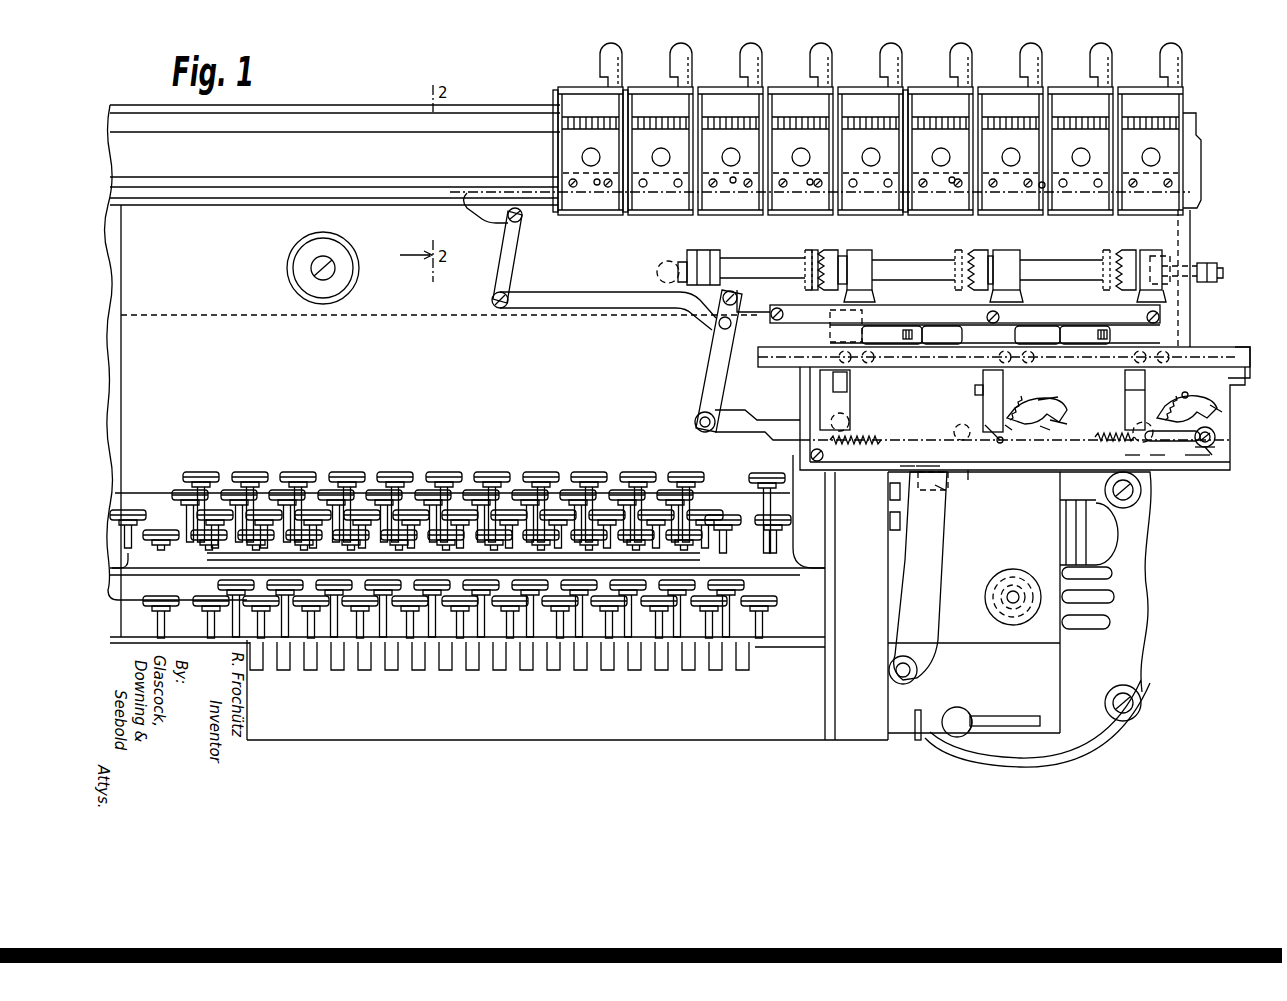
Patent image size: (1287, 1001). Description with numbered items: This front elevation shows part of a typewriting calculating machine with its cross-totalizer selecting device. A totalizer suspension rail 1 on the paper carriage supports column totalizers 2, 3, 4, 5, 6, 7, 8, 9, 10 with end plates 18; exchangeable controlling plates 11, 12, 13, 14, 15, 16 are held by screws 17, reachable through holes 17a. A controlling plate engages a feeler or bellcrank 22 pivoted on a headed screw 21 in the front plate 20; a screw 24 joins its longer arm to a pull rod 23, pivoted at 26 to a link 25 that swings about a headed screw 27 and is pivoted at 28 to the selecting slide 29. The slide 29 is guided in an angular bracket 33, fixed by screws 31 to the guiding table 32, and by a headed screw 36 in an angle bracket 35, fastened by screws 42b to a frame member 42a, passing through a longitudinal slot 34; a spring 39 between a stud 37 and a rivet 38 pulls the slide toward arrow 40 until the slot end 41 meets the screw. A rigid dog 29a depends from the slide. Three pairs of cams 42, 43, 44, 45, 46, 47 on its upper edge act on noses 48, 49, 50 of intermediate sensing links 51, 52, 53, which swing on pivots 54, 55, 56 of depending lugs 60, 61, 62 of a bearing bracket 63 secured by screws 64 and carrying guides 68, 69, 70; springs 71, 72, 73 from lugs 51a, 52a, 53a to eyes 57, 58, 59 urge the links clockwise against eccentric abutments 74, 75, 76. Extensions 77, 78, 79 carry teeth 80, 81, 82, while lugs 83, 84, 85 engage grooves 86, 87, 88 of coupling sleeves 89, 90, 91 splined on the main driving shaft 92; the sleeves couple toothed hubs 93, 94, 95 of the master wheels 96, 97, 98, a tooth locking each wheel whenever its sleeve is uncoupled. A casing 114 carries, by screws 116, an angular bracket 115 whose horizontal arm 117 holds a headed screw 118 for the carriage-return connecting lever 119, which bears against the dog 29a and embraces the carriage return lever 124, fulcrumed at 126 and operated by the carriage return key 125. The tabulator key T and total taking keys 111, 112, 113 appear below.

The frame rail 1 is at (345, 132).
The register module 2 is at (598, 100).
The register module 3 is at (680, 105).
The register module 4 is at (708, 103).
The register module 5 is at (792, 102).
The register module 6 is at (855, 102).
The register module 7 is at (968, 112).
The register module 8 is at (1030, 103).
The register module 9 is at (1093, 103).
The register module 10 is at (1145, 105).
The module pivot 11 is at (600, 180).
The module pivot 12 is at (735, 178).
The module pivot 13 is at (812, 180).
The module pivot 14 is at (954, 178).
The module pivot 15 is at (1044, 183).
The end bracket 16 is at (1188, 160).
The fastening screw 17 is at (606, 187).
The fastening screw 17a is at (678, 187).
The spacer 18 is at (558, 95).
The carriage plate screw 20 is at (372, 262).
The lever pivot 21 is at (508, 222).
The lever 22 is at (522, 252).
The link 23 is at (532, 292).
The pivot 24 is at (496, 310).
The lever 25 is at (718, 380).
The pivot 26 is at (719, 326).
The pivot 27 is at (722, 300).
The pivot 28 is at (694, 424).
The link 29 is at (758, 440).
The axis line 29a is at (965, 447).
The post 31 is at (848, 384).
The guide 32 is at (1240, 345).
The housing 33 is at (800, 380).
The rod 34 is at (1170, 441).
The pivot screw 35 is at (1215, 435).
The plate 36 is at (1202, 456).
The plate 37 is at (1130, 456).
The side plate 38 is at (826, 480).
The spring 39 is at (1110, 442).
The shaft 40 is at (1045, 533).
The arm 41 is at (1213, 441).
The screw 42 is at (822, 456).
The tab 42a is at (975, 472).
The tab 42b is at (1212, 450).
The bracket 43 is at (948, 478).
The pawl 44 is at (1008, 432).
The pawl 45 is at (1045, 432).
The plate 46 is at (1156, 456).
The plate 47 is at (1190, 456).
The lever 48 is at (985, 432).
The cam tail 49 is at (1076, 410).
The cam 50 is at (1218, 411).
The slide 51 is at (888, 336).
The slide 51a is at (950, 336).
The slide 52 is at (1040, 336).
The slide 52a is at (1096, 336).
The screw 53 is at (1168, 351).
The lip 53a is at (1242, 351).
The pivot 54 is at (832, 416).
The pivot 55 is at (962, 424).
The pivot 56 is at (1135, 428).
The cam 57 is at (1010, 405).
The spring 58 is at (1028, 400).
The cam 59 is at (1200, 404).
The post 60 is at (820, 386).
The post 61 is at (983, 385).
The post 62 is at (1125, 391).
The cam nose 63 is at (1050, 399).
The bar 64 is at (1128, 358).
The cam 68 is at (878, 283).
The screw 69 is at (1000, 315).
The screw 70 is at (1146, 350).
The stop 71 is at (975, 390).
The screw 72 is at (1034, 360).
The spring 73 is at (1186, 398).
The marker 74 is at (903, 334).
The marker 75 is at (1098, 334).
The stop 76 is at (1125, 393).
The bracket 77 is at (830, 326).
The bar 78 is at (925, 324).
The bar 79 is at (1095, 324).
The plate 80 is at (772, 305).
The cam 81 is at (990, 297).
The cam 82 is at (1138, 297).
The block 83 is at (862, 250).
The block 84 is at (1012, 250).
The thumb screw 85 is at (1210, 262).
The spacer 86 is at (843, 256).
The spacer 87 is at (991, 256).
The block 88 is at (1155, 250).
The rack 89 is at (830, 250).
The rack 90 is at (980, 250).
The rack 91 is at (1126, 250).
The rod 92 is at (760, 256).
The rack 93 is at (815, 250).
The rod 94 is at (950, 270).
The rod 95 is at (1098, 270).
The rack 96 is at (808, 250).
The rack 97 is at (958, 250).
The rack 98 is at (1106, 250).
The key 111 is at (708, 607).
The key 112 is at (728, 592).
The key 113 is at (760, 606).
The housing 114 is at (870, 732).
The bracket 115 is at (902, 528).
The bracket 116 is at (902, 500).
The tab 117 is at (942, 480).
The tab 118 is at (905, 470).
The tab 119 is at (925, 470).
The lever 124 is at (920, 600).
The key 125 is at (132, 520).
The pivot 126 is at (918, 671).
The keys T is at (676, 586).